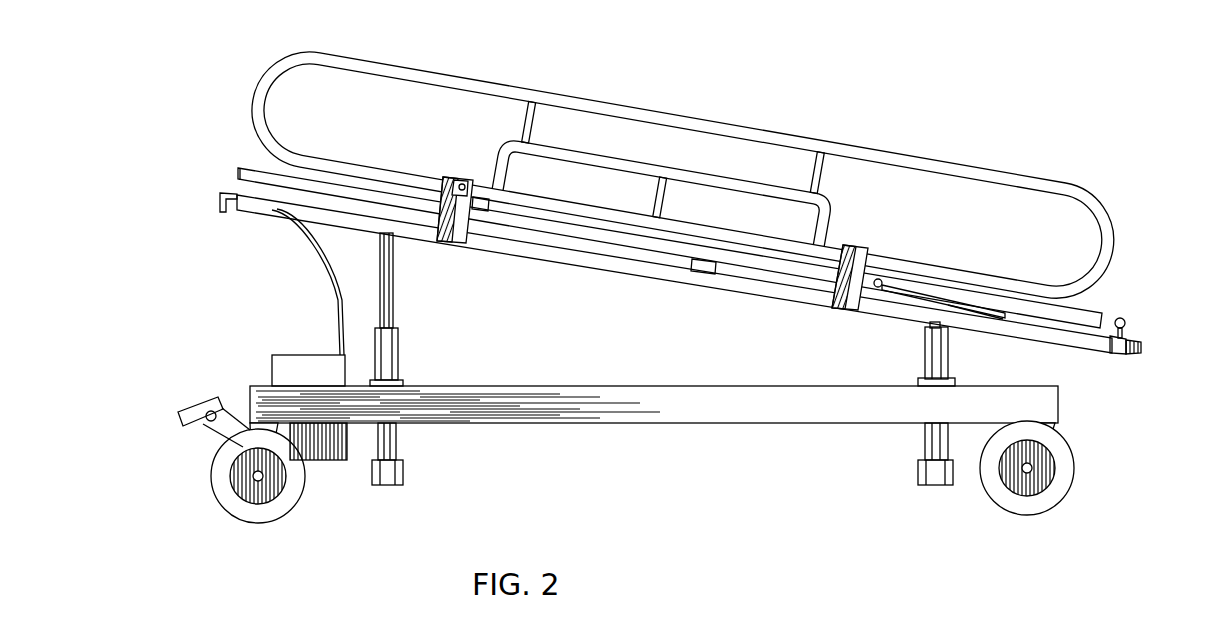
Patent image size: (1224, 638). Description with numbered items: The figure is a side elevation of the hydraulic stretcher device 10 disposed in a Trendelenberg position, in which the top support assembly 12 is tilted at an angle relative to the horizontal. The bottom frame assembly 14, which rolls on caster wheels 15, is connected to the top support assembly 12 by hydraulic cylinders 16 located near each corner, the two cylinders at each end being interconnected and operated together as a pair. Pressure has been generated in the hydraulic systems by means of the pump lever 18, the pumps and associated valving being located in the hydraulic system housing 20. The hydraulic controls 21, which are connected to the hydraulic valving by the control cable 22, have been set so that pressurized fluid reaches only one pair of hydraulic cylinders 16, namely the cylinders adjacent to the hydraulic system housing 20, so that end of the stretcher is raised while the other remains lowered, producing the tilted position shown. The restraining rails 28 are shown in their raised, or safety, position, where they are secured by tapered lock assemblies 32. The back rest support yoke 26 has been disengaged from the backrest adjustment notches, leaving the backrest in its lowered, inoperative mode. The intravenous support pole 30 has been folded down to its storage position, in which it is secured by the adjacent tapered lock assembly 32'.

The hydraulic stretcher device 10 is at (642, 486).
The top support assembly 12 is at (192, 100).
The bottom frame assembly 14 is at (1082, 410).
The caster wheels 15 is at (1074, 476).
The hydraulic cylinders 16 is at (406, 476).
The pump lever 18 is at (200, 401).
The hydraulic system housing 20 is at (320, 462).
The hydraulic controls 21 is at (218, 205).
The control cable 22 is at (335, 309).
The back rest support yoke 26 is at (950, 302).
The restraining rails 28 is at (1005, 181).
The intravenous support pole 30 is at (1142, 351).
The tapered lock assemblies 32 is at (444, 190).
The tapered lock assembly 32' is at (1015, 291).